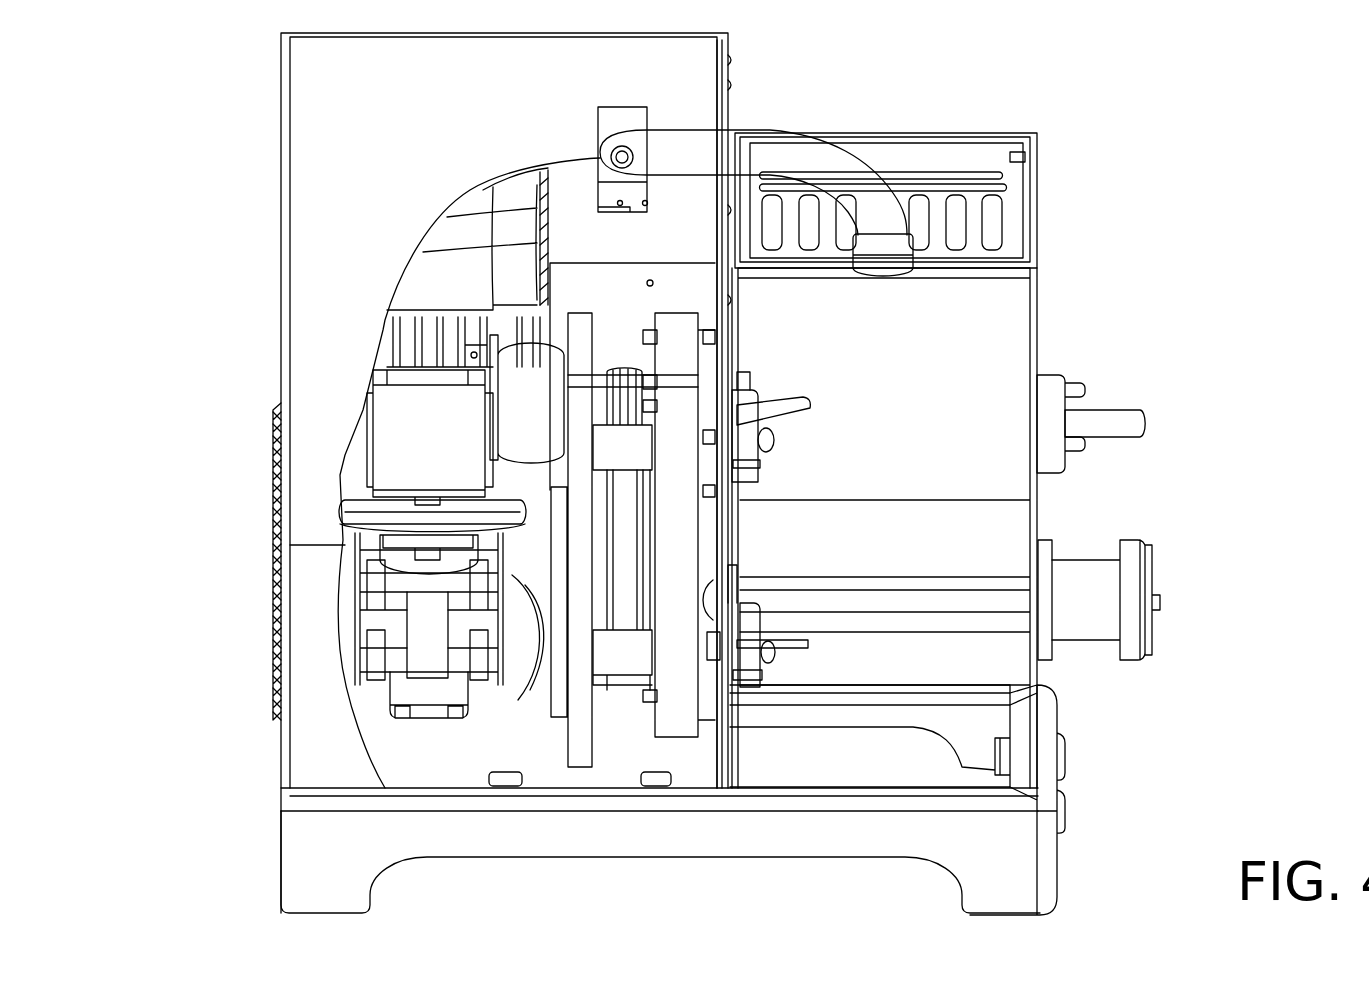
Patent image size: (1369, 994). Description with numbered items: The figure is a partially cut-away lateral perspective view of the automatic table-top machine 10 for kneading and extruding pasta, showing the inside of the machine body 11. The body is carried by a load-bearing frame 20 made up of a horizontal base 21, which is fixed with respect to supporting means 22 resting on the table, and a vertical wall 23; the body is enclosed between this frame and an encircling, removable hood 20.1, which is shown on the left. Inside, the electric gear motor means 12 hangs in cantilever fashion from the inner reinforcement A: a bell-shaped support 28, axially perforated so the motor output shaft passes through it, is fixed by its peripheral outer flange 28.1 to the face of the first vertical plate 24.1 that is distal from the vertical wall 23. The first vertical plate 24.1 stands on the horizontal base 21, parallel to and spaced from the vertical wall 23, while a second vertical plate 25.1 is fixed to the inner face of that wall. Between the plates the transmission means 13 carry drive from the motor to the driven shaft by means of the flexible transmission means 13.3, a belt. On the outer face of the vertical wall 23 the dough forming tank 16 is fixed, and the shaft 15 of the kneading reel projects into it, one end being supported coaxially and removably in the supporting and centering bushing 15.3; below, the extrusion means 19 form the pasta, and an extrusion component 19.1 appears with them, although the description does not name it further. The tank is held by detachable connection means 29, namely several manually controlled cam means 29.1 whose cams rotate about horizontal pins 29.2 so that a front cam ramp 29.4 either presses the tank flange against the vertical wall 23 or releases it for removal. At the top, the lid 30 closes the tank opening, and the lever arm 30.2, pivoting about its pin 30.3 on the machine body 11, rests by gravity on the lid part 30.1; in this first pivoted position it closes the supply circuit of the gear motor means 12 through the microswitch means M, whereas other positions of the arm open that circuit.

The automatic table-top machine 10 is at (1205, 98).
The machine body 11 is at (213, 225).
The electric gear motor means 12 is at (399, 461).
The transmission means 13 is at (622, 358).
The flexible transmission means 13.3 is at (630, 573).
The shaft of kneading reel 15 is at (1112, 412).
The supporting and centering bushing 15.3 is at (1053, 375).
The dough forming tank 16 is at (1062, 270).
The extrusion means 19 is at (1132, 520).
The hub flange 19.1 is at (1062, 650).
The load-bearing frame 20 is at (758, 757).
The hood 20.1 is at (356, 126).
The horizontal base 21 is at (426, 795).
The supporting means 22 is at (680, 835).
The vertical wall 23 is at (716, 244).
The first vertical plate 24.1 is at (566, 740).
The second vertical plate 25.1 is at (672, 738).
The bell-shaped support 28 is at (518, 703).
The peripheral outer flange 28.1 is at (550, 690).
The detachable connection means 29 is at (798, 443).
The manually controlled cam means 29.1 is at (760, 465).
The pin 29.2 is at (776, 441).
The front cam ramp 29.4 is at (737, 372).
The lid 30 is at (1036, 198).
The lid part 30.1 is at (880, 282).
The lever arm 30.2 is at (790, 135).
The pin 30.3 is at (600, 142).
The inner reinforcement A is at (668, 300).
The microswitch means M is at (598, 196).